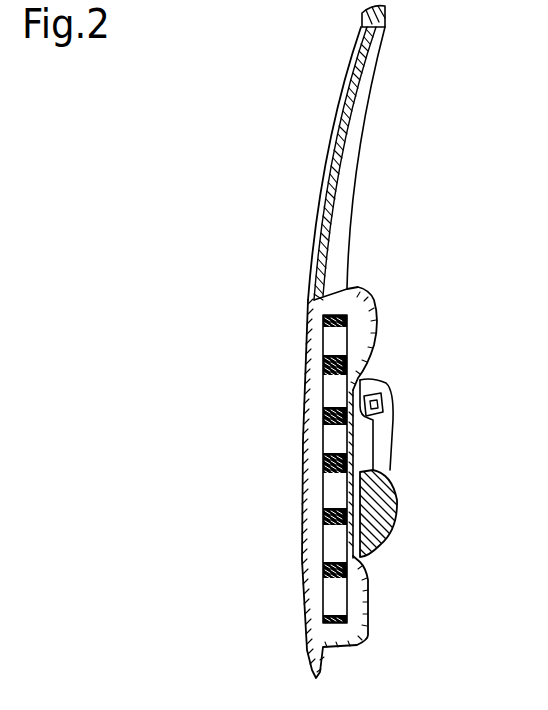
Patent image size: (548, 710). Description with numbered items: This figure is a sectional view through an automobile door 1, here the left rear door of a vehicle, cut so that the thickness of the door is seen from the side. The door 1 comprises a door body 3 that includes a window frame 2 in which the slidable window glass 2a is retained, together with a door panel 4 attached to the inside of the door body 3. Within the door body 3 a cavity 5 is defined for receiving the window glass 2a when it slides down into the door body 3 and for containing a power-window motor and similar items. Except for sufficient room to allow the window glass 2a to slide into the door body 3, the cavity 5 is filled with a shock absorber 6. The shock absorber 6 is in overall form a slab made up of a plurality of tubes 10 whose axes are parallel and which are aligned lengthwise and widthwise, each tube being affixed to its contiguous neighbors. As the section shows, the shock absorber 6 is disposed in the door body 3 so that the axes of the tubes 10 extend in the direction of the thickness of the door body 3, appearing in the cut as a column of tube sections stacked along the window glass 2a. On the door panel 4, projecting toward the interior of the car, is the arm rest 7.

The automobile door 1 is at (368, 245).
The window frame 2 is at (357, 127).
The window glass 2a is at (326, 182).
The door body 3 is at (305, 519).
The door panel 4 is at (372, 345).
The cavity 5 is at (282, 469).
The shock absorber 6 is at (318, 442).
The arm rest 7 is at (388, 506).
The tubes 10 is at (282, 465).